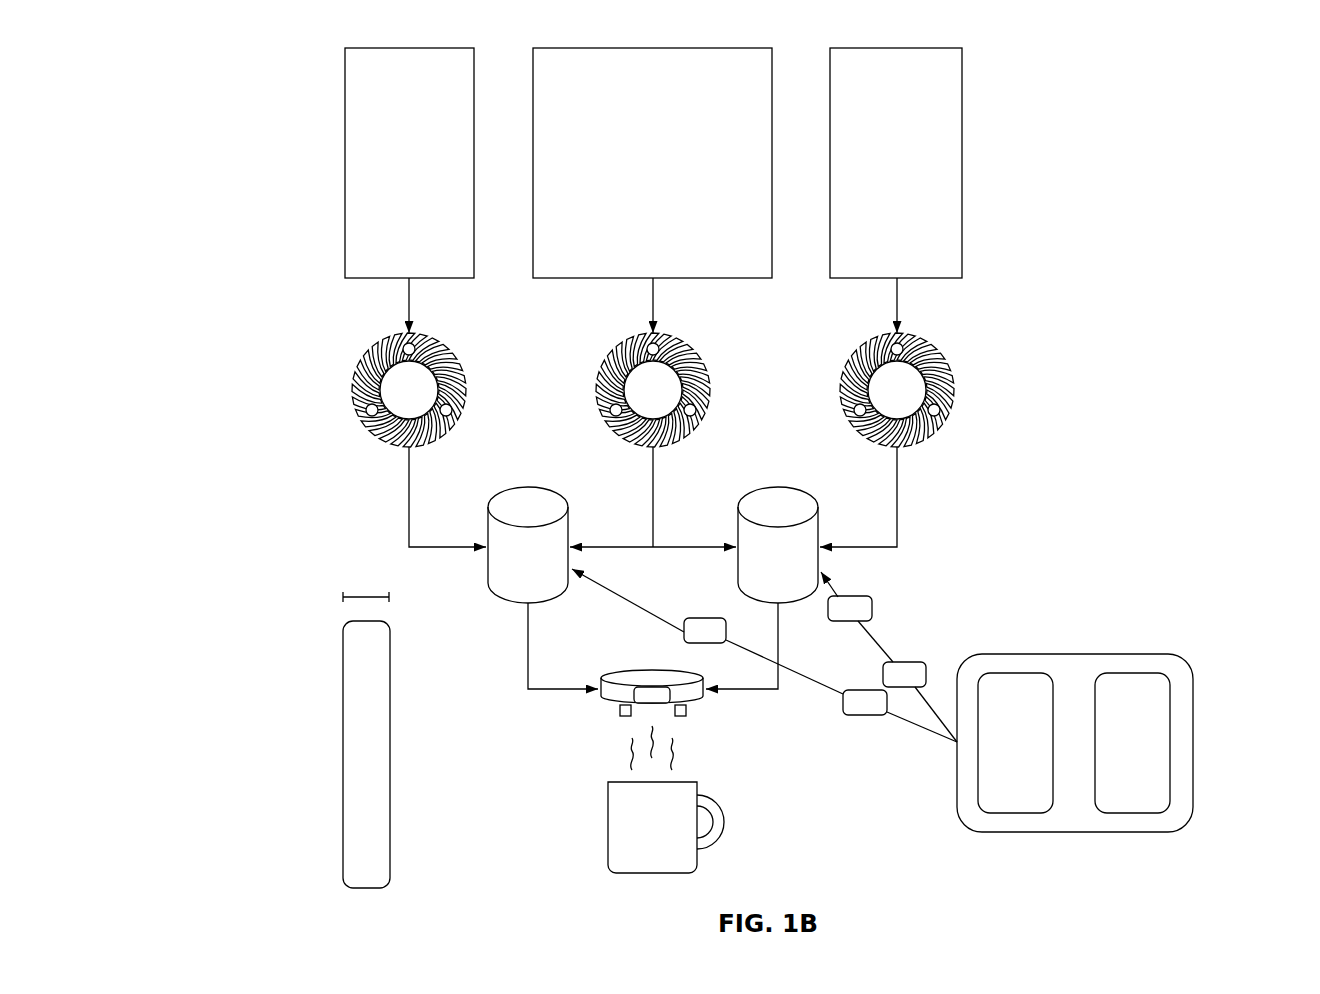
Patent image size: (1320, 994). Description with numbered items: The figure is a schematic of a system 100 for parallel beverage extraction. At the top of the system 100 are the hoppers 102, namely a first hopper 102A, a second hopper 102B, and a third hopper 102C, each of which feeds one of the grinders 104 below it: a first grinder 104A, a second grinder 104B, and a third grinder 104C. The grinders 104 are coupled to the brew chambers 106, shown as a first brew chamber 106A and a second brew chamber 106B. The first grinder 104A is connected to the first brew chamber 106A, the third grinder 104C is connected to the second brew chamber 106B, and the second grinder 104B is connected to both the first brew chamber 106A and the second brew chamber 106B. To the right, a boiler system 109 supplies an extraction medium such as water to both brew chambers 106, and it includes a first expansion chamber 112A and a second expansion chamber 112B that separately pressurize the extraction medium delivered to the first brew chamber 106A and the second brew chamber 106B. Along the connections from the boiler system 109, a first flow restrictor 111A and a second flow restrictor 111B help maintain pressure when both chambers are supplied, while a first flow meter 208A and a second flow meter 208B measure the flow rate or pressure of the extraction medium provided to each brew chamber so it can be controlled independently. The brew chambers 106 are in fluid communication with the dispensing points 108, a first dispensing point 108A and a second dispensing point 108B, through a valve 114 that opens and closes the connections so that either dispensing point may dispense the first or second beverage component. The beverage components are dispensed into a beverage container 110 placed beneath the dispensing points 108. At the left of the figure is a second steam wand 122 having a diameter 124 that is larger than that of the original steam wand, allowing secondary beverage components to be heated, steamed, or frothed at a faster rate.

The system 100 is at (205, 70).
The hoppers 102 is at (312, 158).
The first hopper 102A is at (412, 48).
The second hopper 102B is at (653, 48).
The third hopper 102C is at (896, 48).
The grinders 104 is at (292, 398).
The first grinder 104A is at (370, 358).
The second grinder 104B is at (614, 358).
The third grinder 104C is at (857, 358).
The brew chambers 106 is at (380, 563).
The first brew chamber 106A is at (540, 488).
The second brew chamber 106B is at (788, 488).
The dispensing points 108 is at (520, 703).
The first dispensing point 108A is at (612, 712).
The second dispensing point 108B is at (695, 712).
The boiler system 109 is at (1193, 742).
The beverage container 110 is at (608, 820).
The first flow restrictor 111A is at (865, 715).
The second flow restrictor 111B is at (905, 662).
The first expansion chamber 112A is at (1015, 673).
The second expansion chamber 112B is at (1130, 673).
The valve 114 is at (650, 688).
The second steam wand 122 is at (343, 768).
The diameter 124 is at (357, 597).
The first flow meter 208A is at (710, 618).
The second flow meter 208B is at (858, 596).